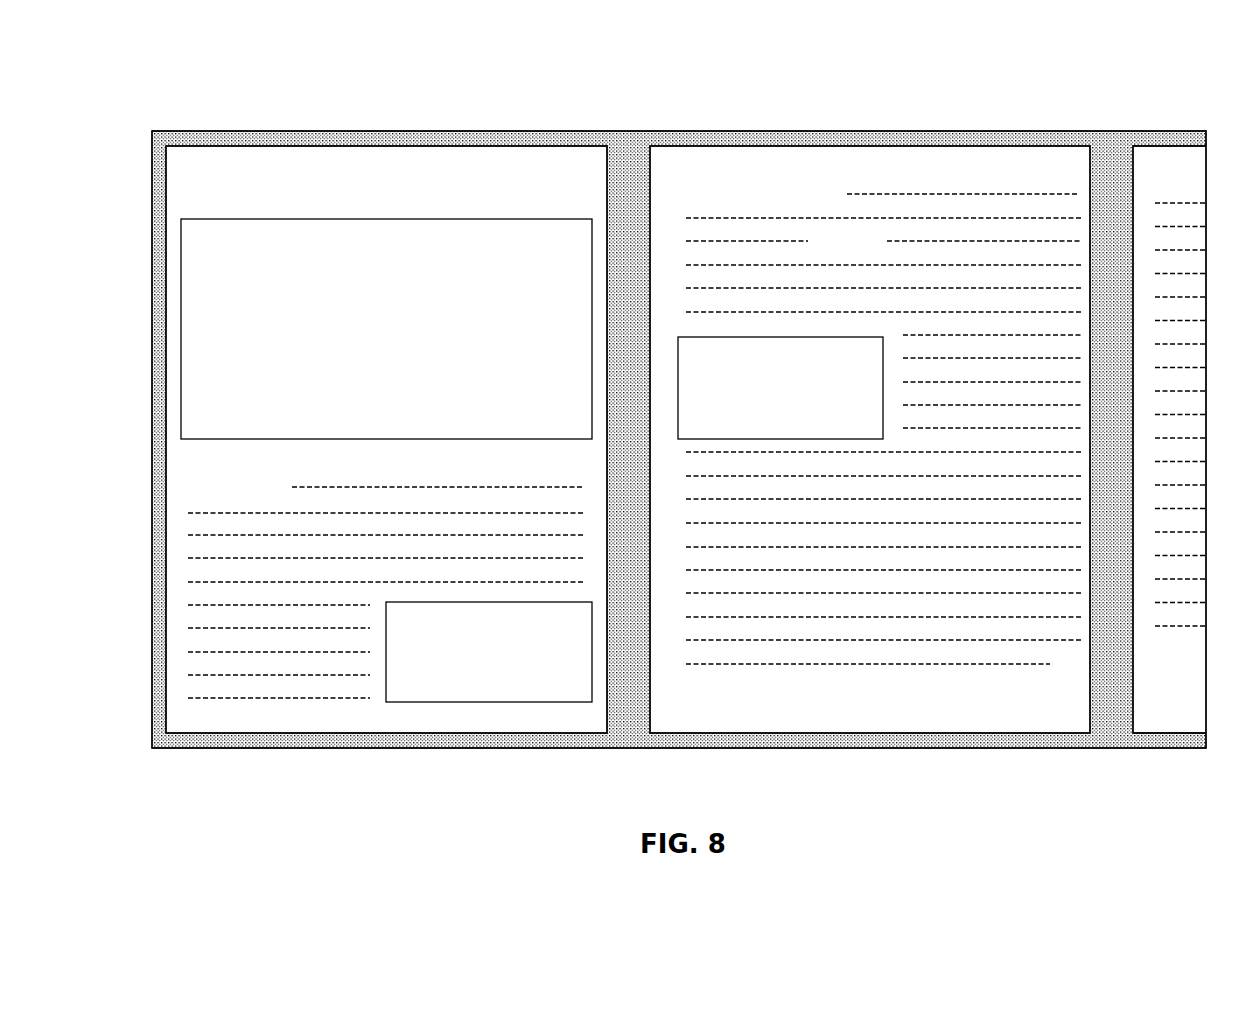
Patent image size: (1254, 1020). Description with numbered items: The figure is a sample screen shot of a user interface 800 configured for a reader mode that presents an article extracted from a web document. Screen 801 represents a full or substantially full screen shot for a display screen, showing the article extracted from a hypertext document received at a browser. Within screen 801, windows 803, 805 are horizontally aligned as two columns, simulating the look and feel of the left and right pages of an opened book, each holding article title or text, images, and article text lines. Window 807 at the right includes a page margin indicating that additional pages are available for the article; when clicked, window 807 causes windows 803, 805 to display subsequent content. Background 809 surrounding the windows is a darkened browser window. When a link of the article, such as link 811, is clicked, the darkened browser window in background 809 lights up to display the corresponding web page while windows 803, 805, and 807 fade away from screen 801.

The article display page 800 is at (273, 24).
The screen 801 is at (417, 110).
The window 803 is at (486, 739).
The window 805 is at (942, 739).
The window 807 is at (1182, 739).
The background 809 is at (1103, 130).
The link 811 is at (847, 226).